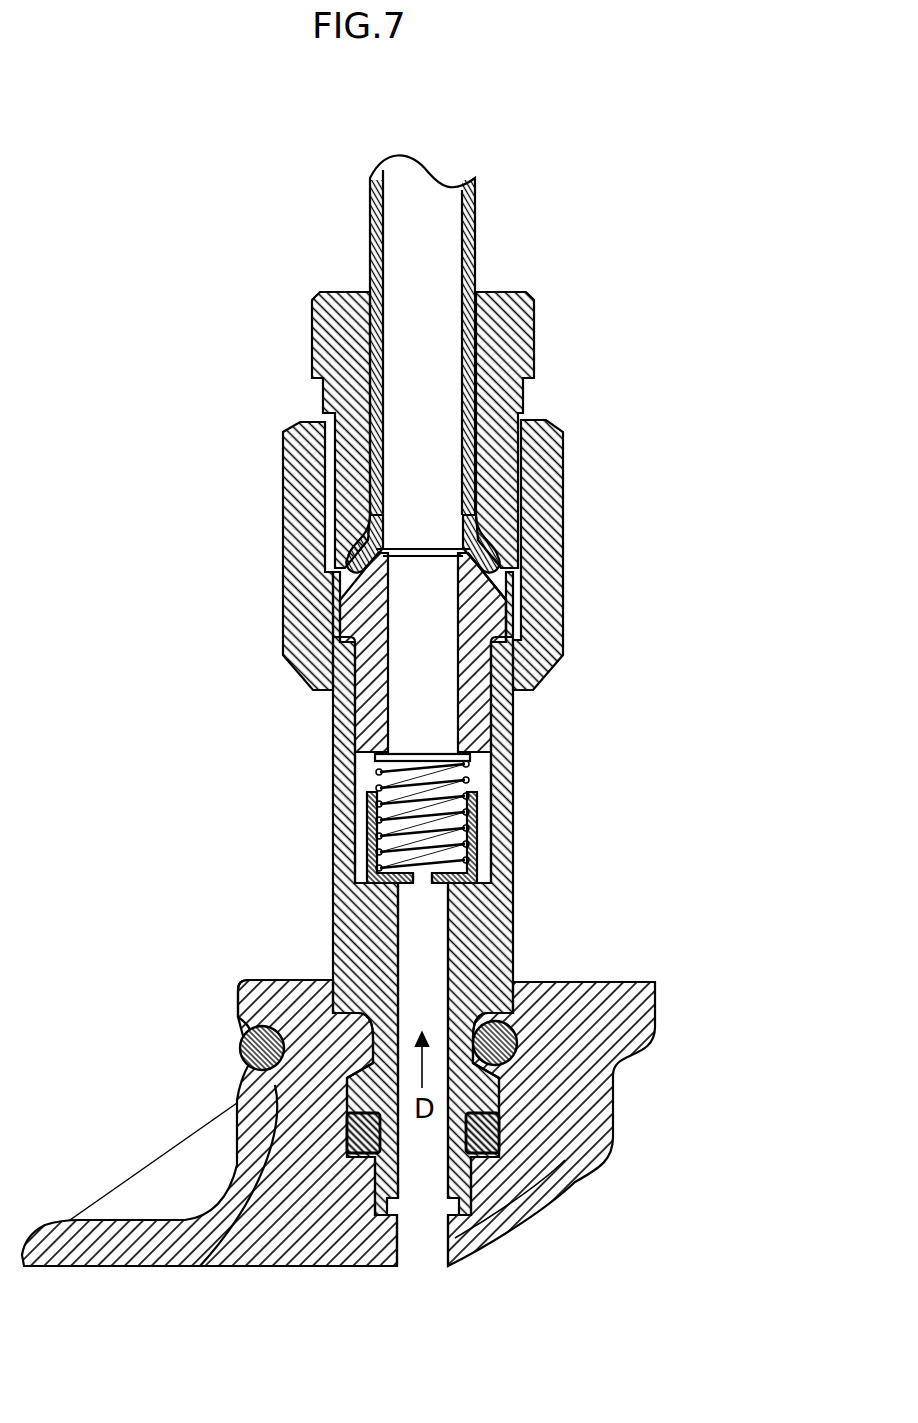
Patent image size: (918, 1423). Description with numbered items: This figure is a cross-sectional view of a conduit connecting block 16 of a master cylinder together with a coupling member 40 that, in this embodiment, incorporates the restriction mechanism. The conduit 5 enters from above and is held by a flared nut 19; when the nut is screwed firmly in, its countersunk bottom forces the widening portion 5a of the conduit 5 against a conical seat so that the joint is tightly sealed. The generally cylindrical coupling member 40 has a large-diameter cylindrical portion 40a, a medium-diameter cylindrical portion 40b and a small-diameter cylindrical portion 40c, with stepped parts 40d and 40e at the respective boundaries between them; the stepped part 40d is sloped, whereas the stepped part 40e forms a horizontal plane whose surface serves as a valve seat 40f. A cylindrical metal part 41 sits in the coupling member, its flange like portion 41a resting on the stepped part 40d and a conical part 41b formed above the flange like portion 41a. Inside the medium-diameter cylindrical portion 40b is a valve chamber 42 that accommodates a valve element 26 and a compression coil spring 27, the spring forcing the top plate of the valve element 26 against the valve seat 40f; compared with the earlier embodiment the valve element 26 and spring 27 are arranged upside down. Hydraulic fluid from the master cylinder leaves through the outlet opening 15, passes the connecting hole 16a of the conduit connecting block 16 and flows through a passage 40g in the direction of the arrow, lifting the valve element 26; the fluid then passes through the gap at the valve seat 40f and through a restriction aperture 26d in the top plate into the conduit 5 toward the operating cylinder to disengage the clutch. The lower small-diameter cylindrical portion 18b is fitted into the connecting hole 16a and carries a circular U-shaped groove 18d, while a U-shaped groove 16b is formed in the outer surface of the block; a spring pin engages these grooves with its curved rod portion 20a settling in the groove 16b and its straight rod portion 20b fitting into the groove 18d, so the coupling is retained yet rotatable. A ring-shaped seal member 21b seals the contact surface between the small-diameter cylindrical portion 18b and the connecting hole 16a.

The conduit 5 is at (505, 363).
The widening portion 5a is at (500, 530).
The flared nut 19 is at (535, 322).
The coupling member 40 is at (244, 453).
The large-diameter cylindrical portion 40a is at (284, 508).
The medium-diameter cylindrical portion 40b is at (333, 740).
The small-diameter cylindrical portion 40c is at (372, 1215).
The stepped part 40d is at (337, 645).
The stepped part 40e is at (378, 889).
The valve seat 40f is at (372, 845).
The passage 40g is at (425, 959).
The cylindrical metal part 41 is at (683, 563).
The flange like portion 41a is at (512, 612).
The conical part 41b is at (512, 580).
The valve chamber 42 is at (363, 778).
The valve element 26 is at (468, 818).
The restriction aperture 26d is at (424, 889).
The compression coil spring 27 is at (472, 758).
The conduit connecting block 16 is at (622, 982).
The connecting hole 16a is at (399, 1217).
The U-shaped groove 16b is at (203, 1265).
The outlet opening 15 is at (452, 1243).
The small-diameter cylindrical portion 18b is at (328, 988).
The U-shaped groove 18d is at (248, 1065).
The curved rod portion 20a is at (240, 1045).
The straight rod portion 20b is at (518, 1040).
The ring-shaped seal member 21b is at (503, 1147).